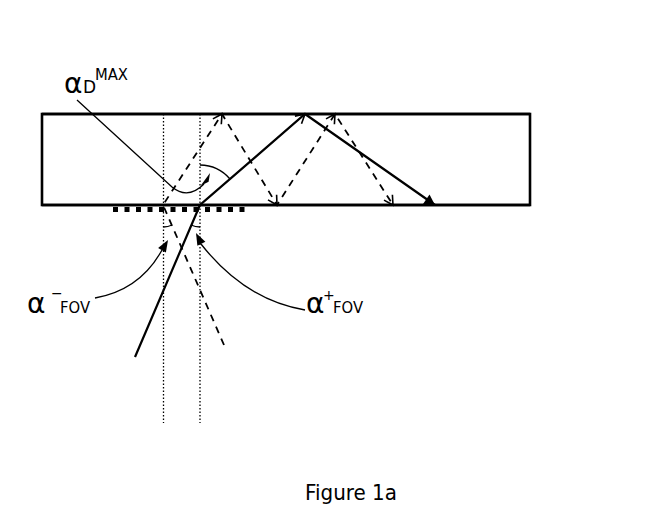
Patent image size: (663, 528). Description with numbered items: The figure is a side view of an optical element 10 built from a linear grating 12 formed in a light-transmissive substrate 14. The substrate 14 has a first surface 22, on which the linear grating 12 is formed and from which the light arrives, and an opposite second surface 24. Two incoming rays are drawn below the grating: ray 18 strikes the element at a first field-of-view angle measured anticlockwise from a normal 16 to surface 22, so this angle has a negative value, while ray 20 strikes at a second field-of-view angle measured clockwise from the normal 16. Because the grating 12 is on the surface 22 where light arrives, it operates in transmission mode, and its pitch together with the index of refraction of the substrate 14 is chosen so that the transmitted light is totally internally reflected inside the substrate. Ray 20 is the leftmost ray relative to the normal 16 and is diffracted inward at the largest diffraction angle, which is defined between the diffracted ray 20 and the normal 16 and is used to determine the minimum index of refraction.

The optical element 10 is at (274, 41).
The linear grating 12 is at (97, 209).
The light-transmissive substrate 14 is at (286, 159).
The normal 16 is at (177, 269).
The ray 18 is at (278, 239).
The ray 20 is at (270, 240).
The first surface 22 is at (503, 222).
The second surface 24 is at (489, 102).